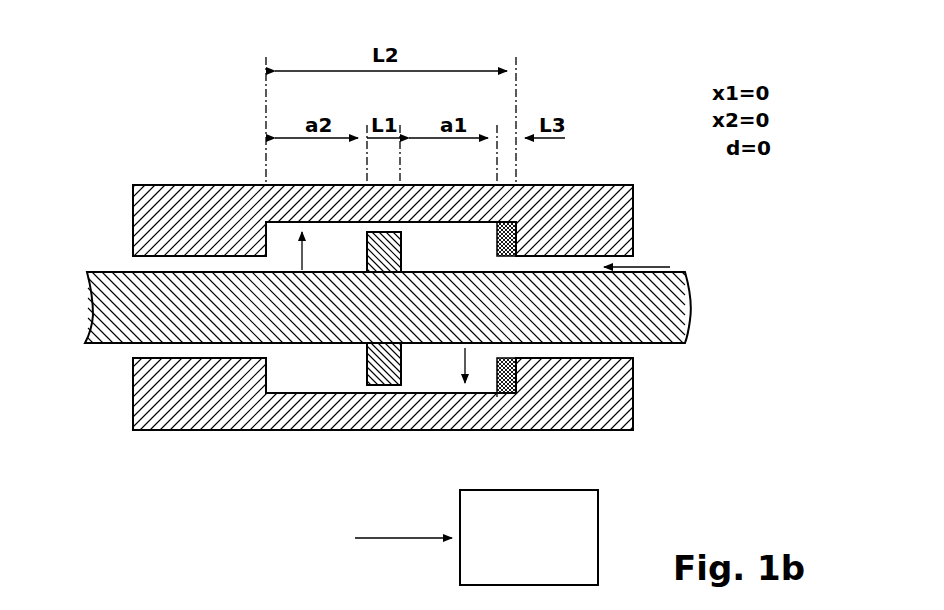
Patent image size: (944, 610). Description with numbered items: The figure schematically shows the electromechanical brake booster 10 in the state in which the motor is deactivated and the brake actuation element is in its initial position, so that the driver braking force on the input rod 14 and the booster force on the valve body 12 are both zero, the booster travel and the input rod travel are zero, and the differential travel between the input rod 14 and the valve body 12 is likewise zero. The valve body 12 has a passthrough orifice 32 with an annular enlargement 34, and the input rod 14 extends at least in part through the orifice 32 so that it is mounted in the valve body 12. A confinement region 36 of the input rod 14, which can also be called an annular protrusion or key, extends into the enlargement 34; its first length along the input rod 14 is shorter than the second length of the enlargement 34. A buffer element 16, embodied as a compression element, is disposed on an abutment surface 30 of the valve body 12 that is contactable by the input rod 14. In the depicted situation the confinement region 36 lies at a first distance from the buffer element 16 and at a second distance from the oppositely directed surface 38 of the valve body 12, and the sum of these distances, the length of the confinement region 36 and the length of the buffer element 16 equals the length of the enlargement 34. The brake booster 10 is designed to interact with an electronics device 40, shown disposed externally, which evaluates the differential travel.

The electromechanical brake booster 10 is at (136, 136).
The valve body 12 is at (170, 430).
The input rod 14 is at (100, 343).
The buffer element 16 is at (505, 397).
The abutment surface 30 is at (514, 395).
The passthrough orifice 32 is at (655, 266).
The annular enlargement 34 is at (303, 256).
The confinement region 36 is at (382, 377).
The surface 38 is at (270, 369).
The electronics device 40 is at (598, 558).